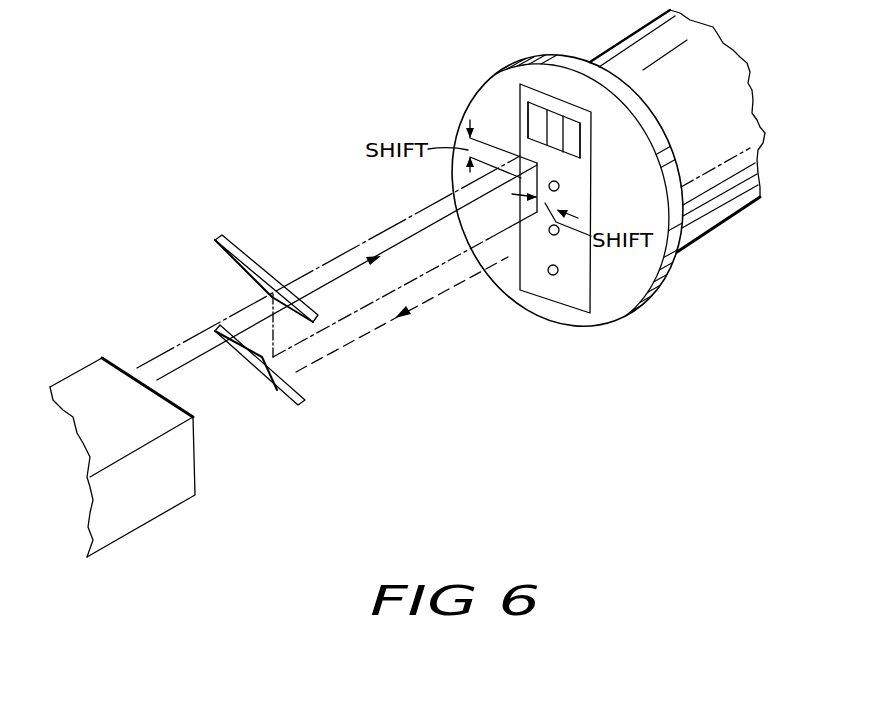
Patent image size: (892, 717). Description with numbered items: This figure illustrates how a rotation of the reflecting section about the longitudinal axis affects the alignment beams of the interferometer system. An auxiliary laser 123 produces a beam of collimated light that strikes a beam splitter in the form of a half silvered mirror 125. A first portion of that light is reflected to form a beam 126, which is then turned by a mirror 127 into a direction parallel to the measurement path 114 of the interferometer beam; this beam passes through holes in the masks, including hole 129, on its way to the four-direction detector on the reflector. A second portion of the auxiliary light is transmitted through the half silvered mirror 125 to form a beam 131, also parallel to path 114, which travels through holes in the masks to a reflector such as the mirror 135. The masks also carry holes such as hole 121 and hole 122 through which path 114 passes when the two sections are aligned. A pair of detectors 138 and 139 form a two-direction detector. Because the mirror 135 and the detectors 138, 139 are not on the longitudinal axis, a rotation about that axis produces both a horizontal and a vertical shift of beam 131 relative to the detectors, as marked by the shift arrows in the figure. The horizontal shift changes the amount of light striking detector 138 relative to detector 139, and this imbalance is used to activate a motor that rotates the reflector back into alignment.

The path 114 is at (321, 302).
The hole 121 is at (559, 187).
The hole 122 is at (549, 275).
The laser 123 is at (195, 482).
The half silvered mirror 125 is at (247, 253).
The beam 126 is at (374, 316).
The mirror 127 is at (275, 393).
The hole 129 is at (559, 233).
The beam 131 is at (429, 207).
The mirror 135 is at (558, 108).
The detector 138 is at (535, 118).
The detector 139 is at (582, 137).